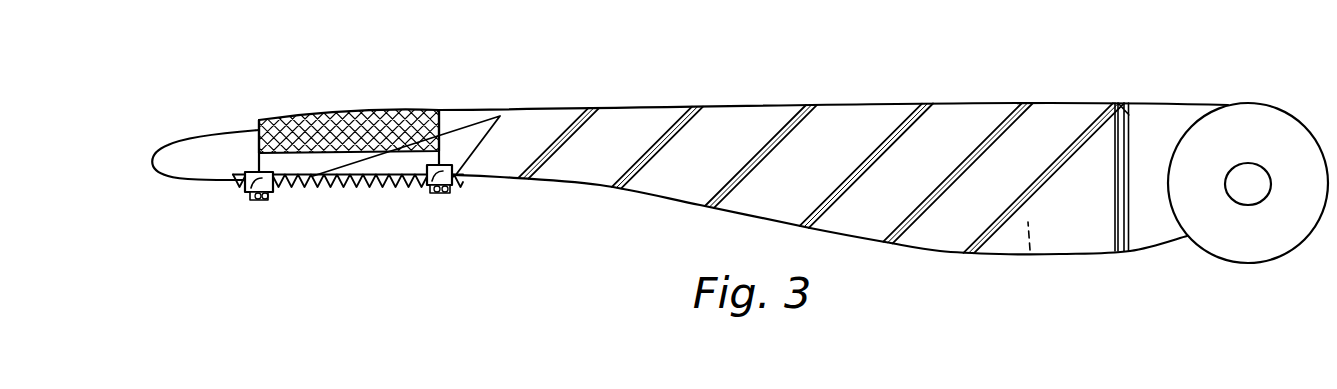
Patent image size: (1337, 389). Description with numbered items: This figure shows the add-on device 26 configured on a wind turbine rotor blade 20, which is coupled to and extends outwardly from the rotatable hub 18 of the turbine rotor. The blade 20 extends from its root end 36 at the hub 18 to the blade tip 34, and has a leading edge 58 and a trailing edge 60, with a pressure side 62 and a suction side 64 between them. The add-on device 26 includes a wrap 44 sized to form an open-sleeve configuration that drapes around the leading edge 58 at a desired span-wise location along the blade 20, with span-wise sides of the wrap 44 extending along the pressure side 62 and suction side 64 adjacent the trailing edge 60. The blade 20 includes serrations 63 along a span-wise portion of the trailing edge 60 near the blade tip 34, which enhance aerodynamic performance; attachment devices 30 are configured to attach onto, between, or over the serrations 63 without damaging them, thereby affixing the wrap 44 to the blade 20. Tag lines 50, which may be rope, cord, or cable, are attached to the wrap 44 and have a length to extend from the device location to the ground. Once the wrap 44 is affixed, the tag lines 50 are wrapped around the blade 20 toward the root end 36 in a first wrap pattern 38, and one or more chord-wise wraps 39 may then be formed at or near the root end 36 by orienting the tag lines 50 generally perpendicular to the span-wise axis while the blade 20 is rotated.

The hub 18 is at (1270, 107).
The rotor blade 20 is at (1061, 74).
The add-on device 26 is at (260, 93).
The attachment device 30 is at (255, 193).
The blade tip 34 is at (152, 166).
The root end 36 is at (1186, 243).
The first wrap pattern 38 is at (921, 231).
The chord-wise wrap 39 is at (1113, 226).
The wrap 44 is at (356, 108).
The tag line 50 is at (502, 120).
The leading edge 58 is at (762, 107).
The trailing edge 60 is at (667, 203).
The pressure side 62 is at (982, 203).
The serrations 63 is at (333, 193).
The suction side 64 is at (1030, 250).